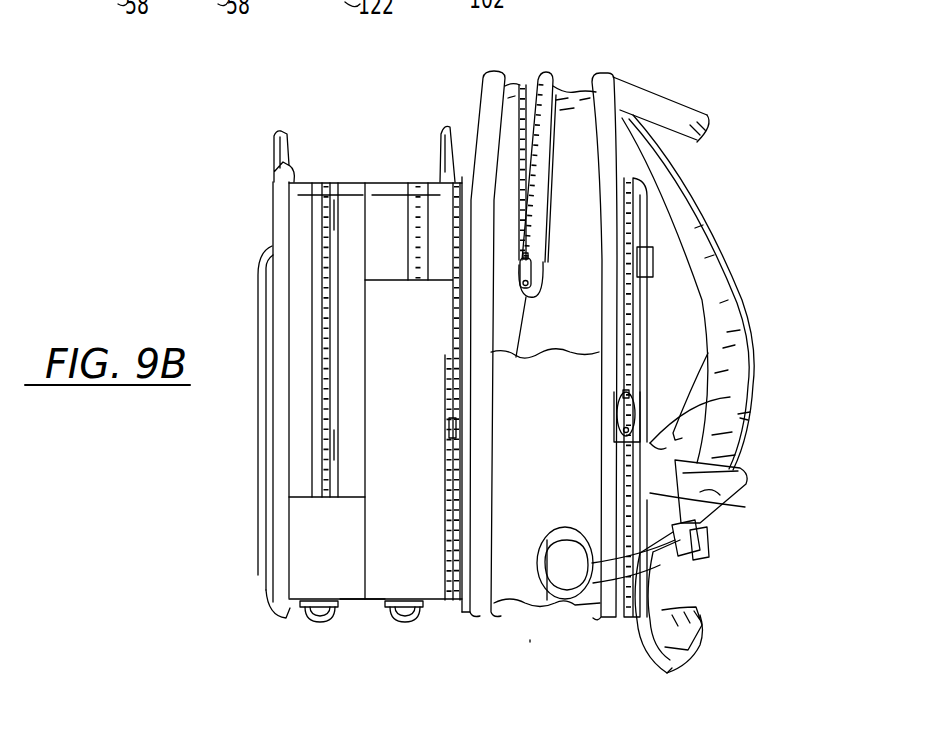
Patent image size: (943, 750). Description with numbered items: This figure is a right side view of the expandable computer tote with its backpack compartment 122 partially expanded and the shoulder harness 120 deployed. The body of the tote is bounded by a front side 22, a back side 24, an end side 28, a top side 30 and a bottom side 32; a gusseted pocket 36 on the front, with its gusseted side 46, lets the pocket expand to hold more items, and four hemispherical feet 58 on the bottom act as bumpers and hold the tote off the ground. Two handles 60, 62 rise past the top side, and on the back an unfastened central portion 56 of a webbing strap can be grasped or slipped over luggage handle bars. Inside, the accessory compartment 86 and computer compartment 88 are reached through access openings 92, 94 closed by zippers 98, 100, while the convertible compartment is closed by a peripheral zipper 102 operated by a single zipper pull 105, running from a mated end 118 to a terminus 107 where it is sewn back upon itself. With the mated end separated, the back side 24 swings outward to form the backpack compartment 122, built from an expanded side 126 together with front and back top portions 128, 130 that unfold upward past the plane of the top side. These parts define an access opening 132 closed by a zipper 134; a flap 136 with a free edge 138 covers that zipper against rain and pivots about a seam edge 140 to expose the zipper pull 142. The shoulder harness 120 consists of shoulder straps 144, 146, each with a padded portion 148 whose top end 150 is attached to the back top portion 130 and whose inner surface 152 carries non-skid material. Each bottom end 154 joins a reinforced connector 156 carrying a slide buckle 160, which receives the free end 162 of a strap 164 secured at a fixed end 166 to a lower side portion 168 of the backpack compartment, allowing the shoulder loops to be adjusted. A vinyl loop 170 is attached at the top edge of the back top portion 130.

The front side 22 is at (260, 570).
The back side 24 is at (648, 338).
The end side 28 is at (336, 562).
The top side 30 is at (315, 183).
The bottom side 32 is at (358, 601).
The gusseted pocket 36 is at (246, 470).
The gusseted side 46 is at (262, 392).
The central portion 56 is at (650, 265).
The feet 58 is at (322, 622).
The handle 60 is at (293, 121).
The handle 62 is at (433, 118).
The accessory compartment 86 is at (306, 226).
The computer compartment 88 is at (384, 203).
The access opening 92 is at (337, 447).
The access opening 94 is at (410, 250).
The zipper closure member 98 is at (325, 430).
The zipper closure member 100 is at (409, 391).
The zipper closure member 102 is at (458, 612).
The zipper pull 105 is at (616, 415).
The terminus 107 is at (446, 358).
The mated end 118 is at (450, 432).
The shoulder harness 120 is at (750, 275).
The backpack compartment 122 is at (532, 655).
The expanded side 126 is at (497, 536).
The front top portion 128 is at (471, 103).
The back top portion 130 is at (583, 117).
The access opening 132 is at (533, 90).
The zipper 134 is at (538, 237).
The flap 136 is at (536, 268).
The free edge 138 is at (547, 150).
The seam edge 140 is at (558, 178).
The zipper pull 142 is at (532, 300).
The shoulder strap 144 is at (670, 405).
The shoulder strap 146 is at (752, 420).
The padded portion 148 is at (703, 378).
The top end 150 is at (622, 98).
The inner surface 152 is at (765, 393).
The bottom end 154 is at (735, 468).
The reinforced connector 156 is at (745, 507).
The slide buckle 160 is at (709, 551).
The free end 162 is at (700, 633).
The strap 164 is at (538, 580).
The fixed end 166 is at (568, 606).
The lower side portion 168 is at (597, 525).
The loop 170 is at (709, 118).